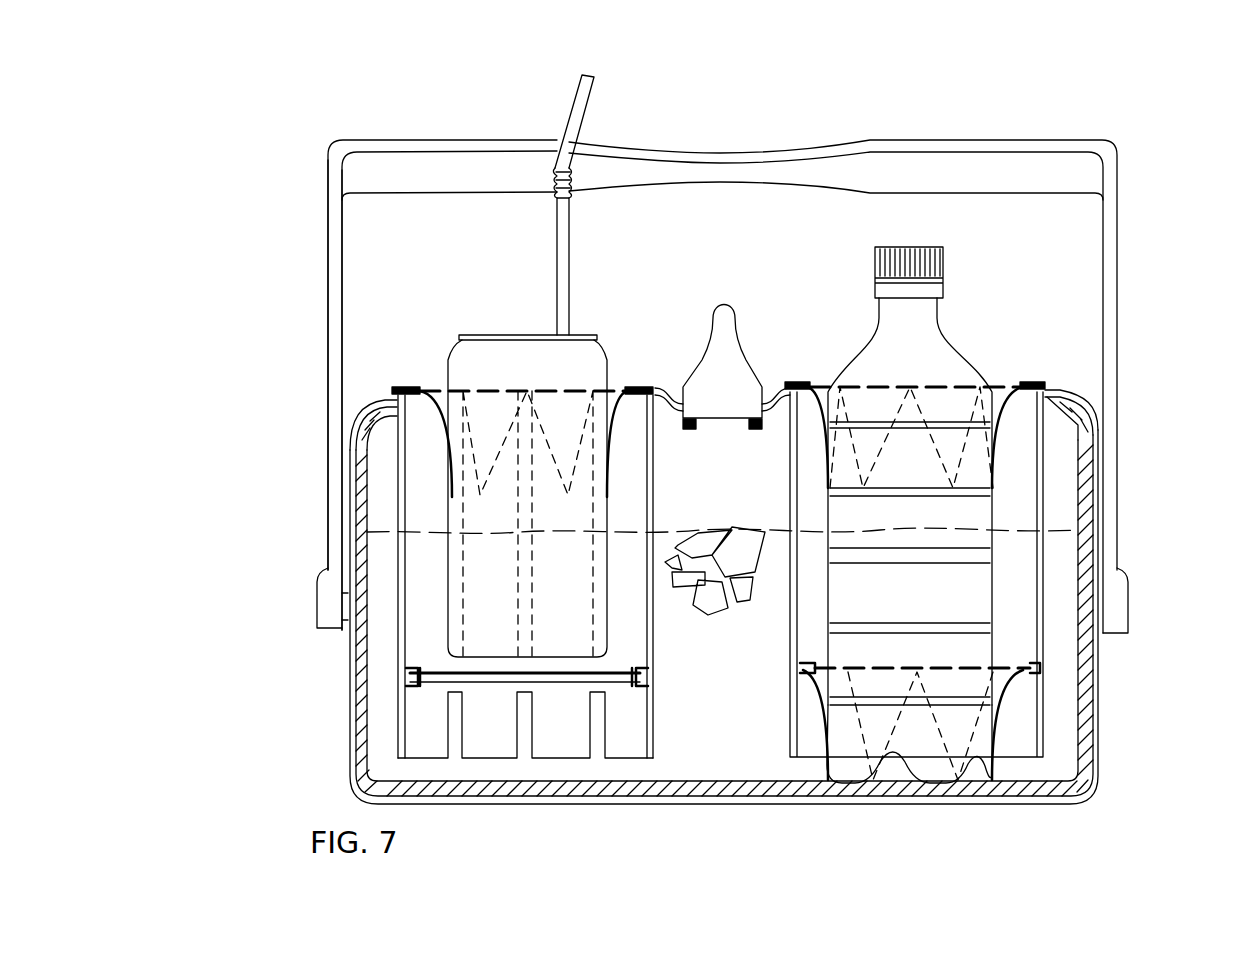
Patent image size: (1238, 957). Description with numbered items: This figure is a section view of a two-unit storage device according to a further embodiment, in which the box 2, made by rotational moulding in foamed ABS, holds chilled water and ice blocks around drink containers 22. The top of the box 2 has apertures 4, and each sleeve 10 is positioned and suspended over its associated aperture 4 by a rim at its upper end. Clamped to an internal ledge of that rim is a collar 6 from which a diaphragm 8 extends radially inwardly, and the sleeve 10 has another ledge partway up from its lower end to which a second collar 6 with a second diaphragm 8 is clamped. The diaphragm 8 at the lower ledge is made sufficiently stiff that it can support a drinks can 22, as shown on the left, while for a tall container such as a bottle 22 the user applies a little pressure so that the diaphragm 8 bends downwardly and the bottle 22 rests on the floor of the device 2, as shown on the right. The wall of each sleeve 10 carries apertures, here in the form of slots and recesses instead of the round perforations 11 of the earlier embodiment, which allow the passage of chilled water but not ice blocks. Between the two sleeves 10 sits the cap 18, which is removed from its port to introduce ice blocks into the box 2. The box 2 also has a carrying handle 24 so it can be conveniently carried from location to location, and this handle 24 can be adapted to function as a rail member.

The box 2 is at (1152, 157).
The aperture 4 is at (440, 385).
The collar 6 is at (1035, 383).
The diaphragm 8 is at (1018, 360).
The sleeve 10 is at (400, 708).
The perforations 11 is at (597, 745).
The cap 18 is at (752, 376).
The drink container 22 is at (597, 338).
The carrying handle 24 is at (327, 320).